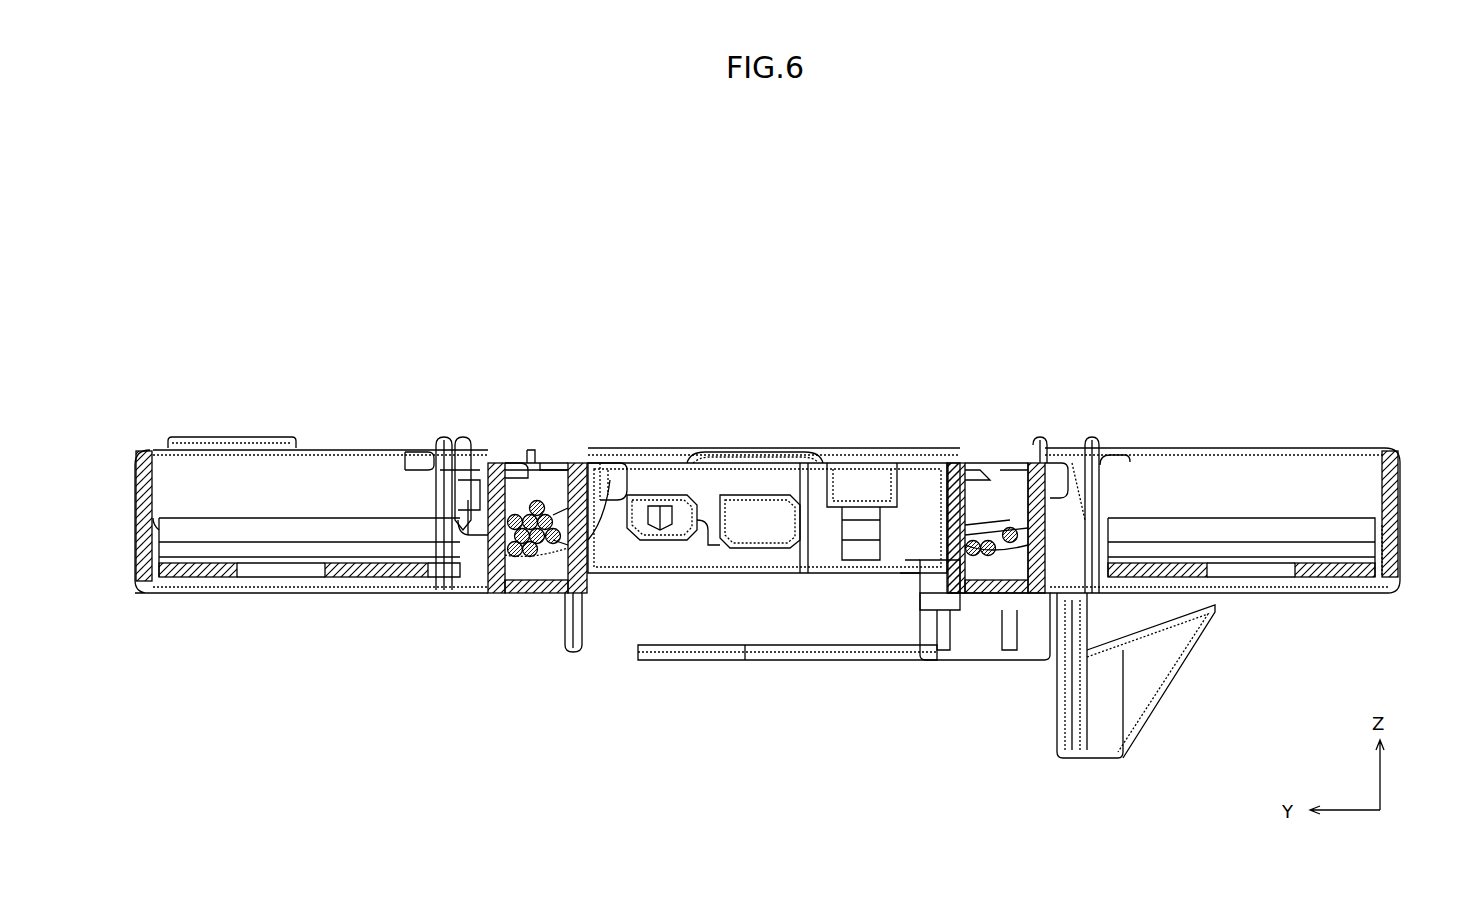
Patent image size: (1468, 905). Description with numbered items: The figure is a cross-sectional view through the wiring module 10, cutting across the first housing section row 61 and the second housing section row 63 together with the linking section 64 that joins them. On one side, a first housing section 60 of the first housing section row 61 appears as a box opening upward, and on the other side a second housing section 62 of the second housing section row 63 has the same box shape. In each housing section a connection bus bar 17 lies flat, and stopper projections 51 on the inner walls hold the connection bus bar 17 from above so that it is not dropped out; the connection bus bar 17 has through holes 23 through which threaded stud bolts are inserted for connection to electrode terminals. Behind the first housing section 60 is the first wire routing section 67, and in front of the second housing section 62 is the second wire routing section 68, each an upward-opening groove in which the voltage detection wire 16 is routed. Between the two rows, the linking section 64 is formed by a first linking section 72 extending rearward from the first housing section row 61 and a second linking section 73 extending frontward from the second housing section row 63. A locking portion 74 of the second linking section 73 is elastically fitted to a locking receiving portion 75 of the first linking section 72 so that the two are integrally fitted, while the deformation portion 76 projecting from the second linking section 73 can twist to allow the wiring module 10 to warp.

The wiring module 10 is at (1160, 295).
The voltage detection wire 16 is at (513, 555).
The connection bus bar 17 is at (218, 563).
The through hole 23 is at (241, 567).
The stopper projection 51 is at (455, 553).
The first housing section 60 is at (160, 480).
The first housing section row 61 is at (135, 482).
The second housing section 62 is at (1380, 483).
The second housing section row 63 is at (1400, 487).
The linking section 64 is at (823, 454).
The first wire routing section 67 is at (558, 585).
The second wire routing section 68 is at (1003, 568).
The first linking section 72 is at (770, 465).
The second linking section 73 is at (915, 478).
The locking portion 74 is at (665, 522).
The locking receiving portion 75 is at (655, 478).
The deformation portion 76 is at (860, 475).